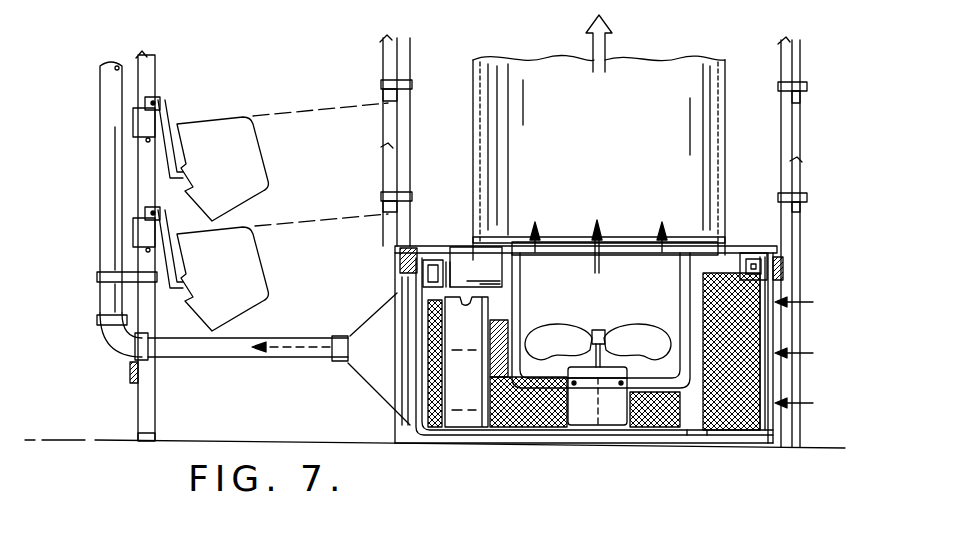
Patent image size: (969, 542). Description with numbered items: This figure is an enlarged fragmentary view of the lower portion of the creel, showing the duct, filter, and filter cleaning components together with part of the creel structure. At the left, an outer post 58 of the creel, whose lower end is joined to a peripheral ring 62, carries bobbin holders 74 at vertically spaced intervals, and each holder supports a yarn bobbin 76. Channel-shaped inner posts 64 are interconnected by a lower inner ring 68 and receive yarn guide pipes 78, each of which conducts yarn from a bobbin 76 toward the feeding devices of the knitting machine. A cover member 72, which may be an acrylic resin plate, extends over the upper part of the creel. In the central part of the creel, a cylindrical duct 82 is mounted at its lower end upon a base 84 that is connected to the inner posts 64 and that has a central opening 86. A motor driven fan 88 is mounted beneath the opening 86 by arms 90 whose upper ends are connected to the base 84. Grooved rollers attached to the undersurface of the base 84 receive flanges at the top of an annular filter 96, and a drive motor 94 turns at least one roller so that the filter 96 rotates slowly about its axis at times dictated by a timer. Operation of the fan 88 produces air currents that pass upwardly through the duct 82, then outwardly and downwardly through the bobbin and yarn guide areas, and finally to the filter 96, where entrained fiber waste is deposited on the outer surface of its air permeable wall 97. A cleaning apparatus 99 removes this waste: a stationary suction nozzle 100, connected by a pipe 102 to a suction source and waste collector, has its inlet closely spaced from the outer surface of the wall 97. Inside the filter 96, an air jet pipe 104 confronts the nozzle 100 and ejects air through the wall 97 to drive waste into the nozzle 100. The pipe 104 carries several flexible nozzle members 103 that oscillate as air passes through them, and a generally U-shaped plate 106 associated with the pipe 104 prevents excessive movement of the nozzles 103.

The outer post 58 is at (156, 78).
The peripheral ring 62 is at (130, 378).
The inner post 64 is at (405, 125).
The lower inner ring 68 is at (800, 260).
The cover member 72 is at (400, 246).
The bobbin holder 74 is at (165, 118).
The yarn bobbin 76 is at (250, 180).
The yarn guide pipe 78 is at (383, 63).
The duct 82 is at (660, 70).
The base 84 is at (505, 253).
The central opening 86 is at (623, 253).
The motor driven fan 88 is at (607, 397).
The arm 90 is at (687, 340).
The drive motor 94 is at (475, 248).
The annular filter 96 is at (737, 420).
The air permeable wall 97 is at (773, 297).
The fiber waste removing apparatus 99 is at (370, 291).
The stationary suction nozzle 100 is at (380, 388).
The pipe 102 is at (190, 360).
The flexible nozzle member 103 is at (465, 432).
The air jet pipe 104 is at (507, 427).
The U-shaped plate 106 is at (465, 327).